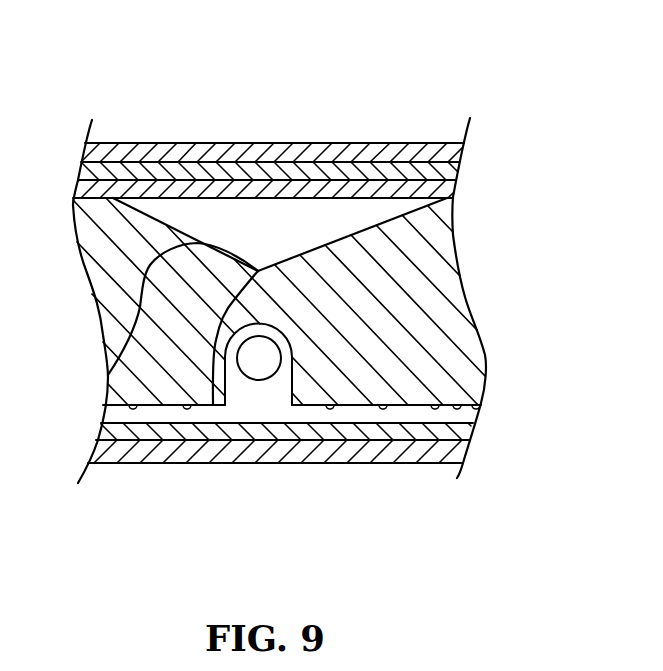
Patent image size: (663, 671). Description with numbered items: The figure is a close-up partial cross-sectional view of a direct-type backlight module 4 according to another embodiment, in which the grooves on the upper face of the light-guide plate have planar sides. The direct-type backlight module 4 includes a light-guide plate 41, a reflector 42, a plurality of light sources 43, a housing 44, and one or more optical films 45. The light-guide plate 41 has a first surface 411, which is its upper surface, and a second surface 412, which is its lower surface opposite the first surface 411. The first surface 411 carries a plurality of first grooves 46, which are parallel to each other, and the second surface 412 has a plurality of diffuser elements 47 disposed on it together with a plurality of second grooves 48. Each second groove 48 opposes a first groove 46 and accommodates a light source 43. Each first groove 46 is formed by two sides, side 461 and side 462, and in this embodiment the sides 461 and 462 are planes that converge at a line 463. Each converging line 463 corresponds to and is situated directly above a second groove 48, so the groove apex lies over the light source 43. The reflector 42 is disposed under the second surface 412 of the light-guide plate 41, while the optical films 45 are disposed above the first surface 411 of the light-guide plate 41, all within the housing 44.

The direct-type backlight module 4 is at (499, 88).
The light-guide plate 41 is at (417, 325).
The first surface 411 is at (400, 143).
The second surface 412 is at (400, 407).
The reflector 42 is at (450, 432).
The light source 43 is at (260, 360).
The housing 44 is at (447, 453).
The optical films 45 is at (478, 145).
The first groove 46 is at (242, 216).
The side 461 is at (108, 375).
The side 462 is at (370, 262).
The converging line 463 is at (213, 405).
The diffuser elements 47 is at (123, 443).
The second groove 48 is at (263, 392).